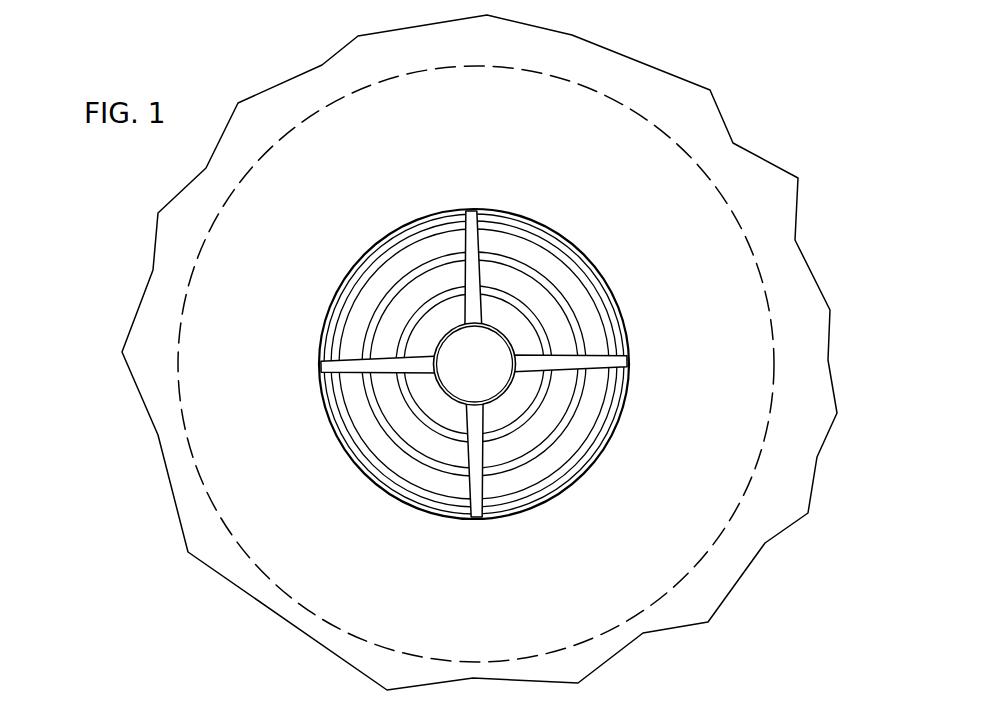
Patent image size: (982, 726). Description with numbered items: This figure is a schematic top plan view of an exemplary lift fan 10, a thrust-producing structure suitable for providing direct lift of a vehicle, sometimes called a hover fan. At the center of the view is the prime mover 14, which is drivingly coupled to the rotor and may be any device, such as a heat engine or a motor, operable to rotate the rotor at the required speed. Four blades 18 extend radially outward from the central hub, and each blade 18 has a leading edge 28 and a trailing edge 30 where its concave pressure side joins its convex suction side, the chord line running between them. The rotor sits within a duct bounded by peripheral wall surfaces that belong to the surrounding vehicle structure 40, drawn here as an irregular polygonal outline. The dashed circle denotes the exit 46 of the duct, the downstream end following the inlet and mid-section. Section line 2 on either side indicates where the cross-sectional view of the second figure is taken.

The lift fan 10 is at (479, 352).
The prime mover 14 is at (487, 378).
The blades 18 is at (620, 363).
The leading edge 28 is at (598, 342).
The trailing edge 30 is at (598, 380).
The vehicle structure 40 is at (700, 607).
The exit 46 is at (728, 522).
The section line 2- 2 is at (43, 362).